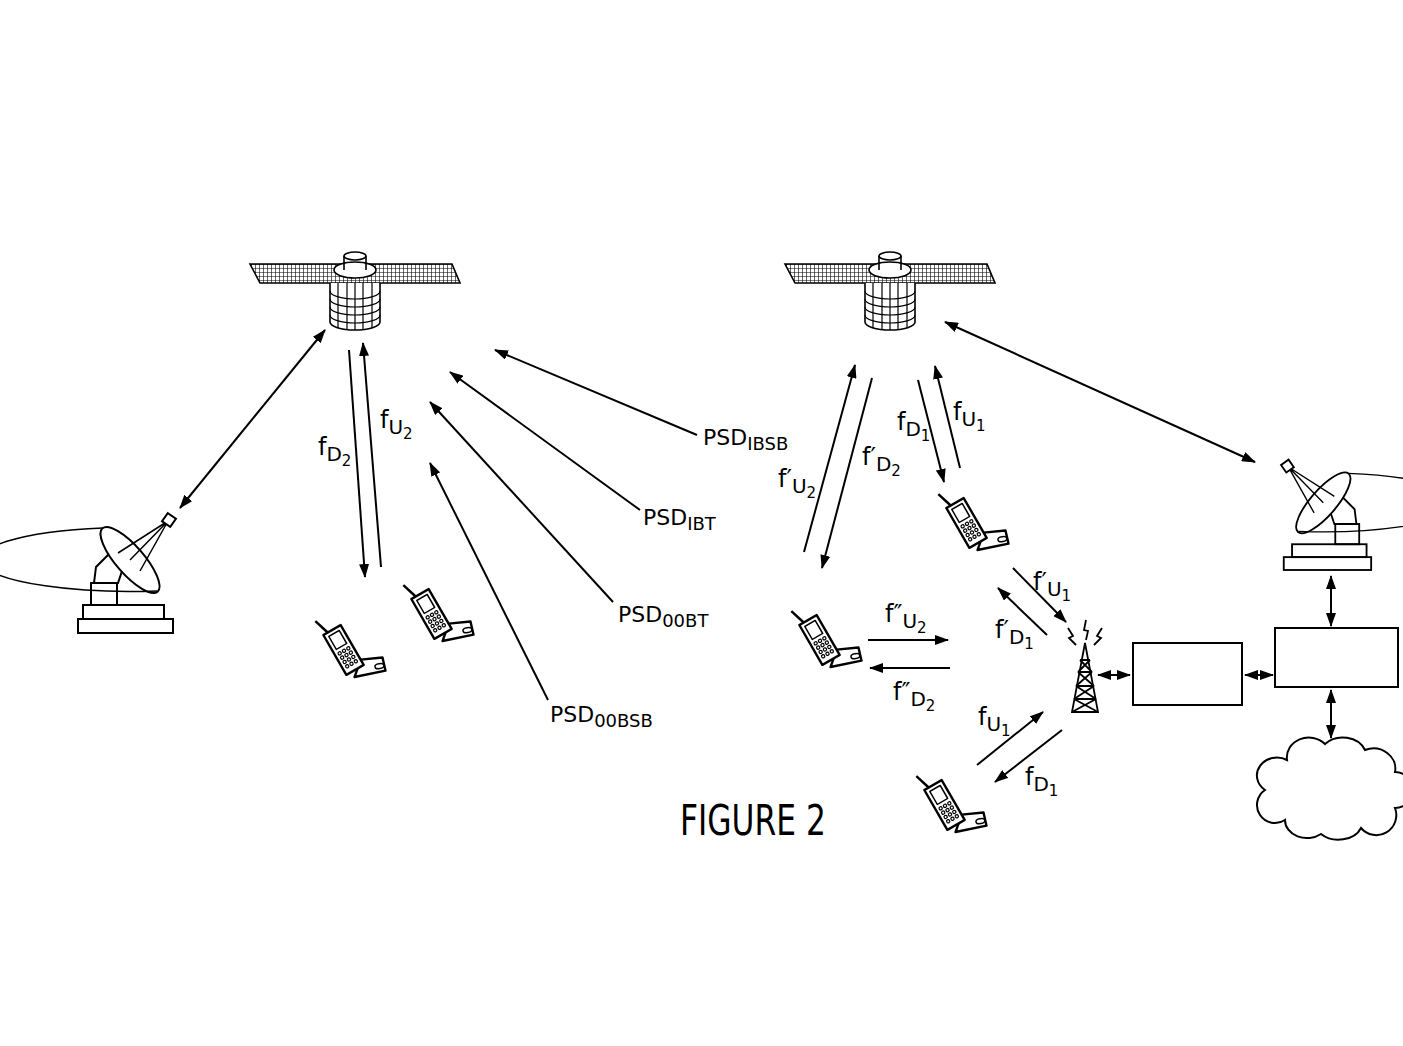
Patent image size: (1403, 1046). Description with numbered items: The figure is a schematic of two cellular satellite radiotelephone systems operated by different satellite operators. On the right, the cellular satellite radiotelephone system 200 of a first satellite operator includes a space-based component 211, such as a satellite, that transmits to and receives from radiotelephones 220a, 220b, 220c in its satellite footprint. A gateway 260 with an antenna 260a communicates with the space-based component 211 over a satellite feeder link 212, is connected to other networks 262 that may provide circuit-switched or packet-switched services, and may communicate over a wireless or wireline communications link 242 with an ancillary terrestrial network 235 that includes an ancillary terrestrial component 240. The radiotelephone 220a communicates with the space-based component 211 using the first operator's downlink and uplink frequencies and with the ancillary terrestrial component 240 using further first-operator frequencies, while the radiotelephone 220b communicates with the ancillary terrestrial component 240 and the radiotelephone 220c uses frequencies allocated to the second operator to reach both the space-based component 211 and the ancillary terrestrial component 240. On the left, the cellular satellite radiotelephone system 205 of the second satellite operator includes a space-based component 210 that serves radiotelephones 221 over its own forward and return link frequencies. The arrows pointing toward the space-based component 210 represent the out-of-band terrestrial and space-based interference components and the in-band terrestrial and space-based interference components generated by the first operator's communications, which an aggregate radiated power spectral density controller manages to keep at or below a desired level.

The cellular satellite radiotelephone system 200 is at (1032, 203).
The cellular satellite radiotelephone system 205 is at (387, 203).
The space-based component 210 is at (398, 270).
The space-based component 211 is at (906, 270).
The satellite feeder link 212 is at (1095, 388).
The radiotelephone 220a is at (972, 522).
The radiotelephone 220b is at (928, 812).
The radiotelephone 220c is at (803, 648).
The radiotelephones 221 is at (341, 673).
The ancillary terrestrial network 235 is at (1168, 685).
The ancillary terrestrial component 240 is at (1092, 622).
The communications link 242 is at (1262, 684).
The gateway 260 is at (1319, 688).
The antenna 260a is at (1352, 480).
The other networks 262 is at (1320, 831).